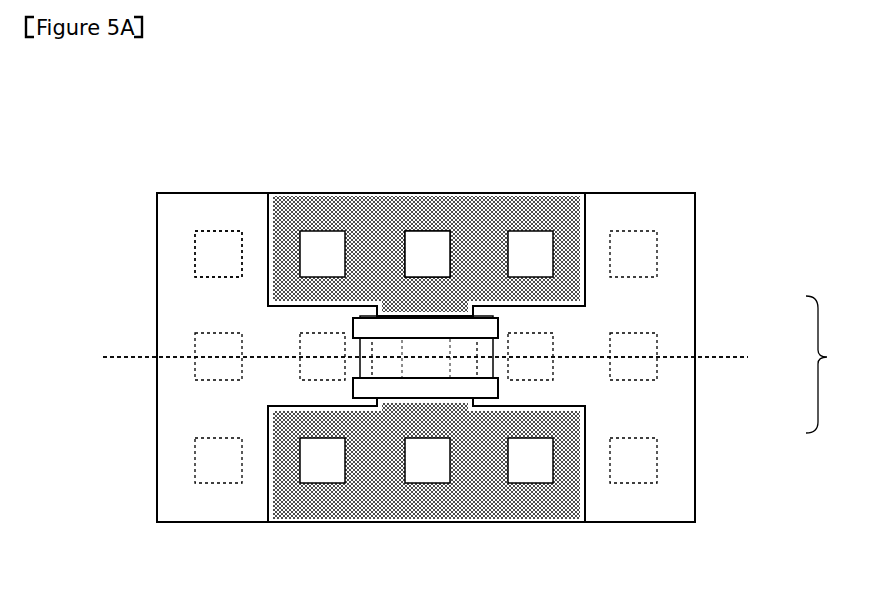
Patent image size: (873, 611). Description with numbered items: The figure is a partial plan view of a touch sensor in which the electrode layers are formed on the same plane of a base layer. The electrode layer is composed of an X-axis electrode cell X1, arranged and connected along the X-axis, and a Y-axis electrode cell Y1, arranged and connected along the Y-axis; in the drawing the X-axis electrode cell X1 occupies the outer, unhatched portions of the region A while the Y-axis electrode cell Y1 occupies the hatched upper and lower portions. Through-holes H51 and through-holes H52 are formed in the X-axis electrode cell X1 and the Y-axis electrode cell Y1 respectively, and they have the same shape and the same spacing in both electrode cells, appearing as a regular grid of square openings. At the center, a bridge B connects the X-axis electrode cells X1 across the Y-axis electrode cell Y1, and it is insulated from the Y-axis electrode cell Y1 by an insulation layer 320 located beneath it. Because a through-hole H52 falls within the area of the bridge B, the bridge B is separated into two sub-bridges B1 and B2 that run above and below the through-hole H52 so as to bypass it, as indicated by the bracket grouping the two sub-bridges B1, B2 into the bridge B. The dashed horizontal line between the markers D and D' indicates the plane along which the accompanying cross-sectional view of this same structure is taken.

The X-axis electrode cell X1 is at (182, 193).
The Y-axis electrode cell Y1 is at (478, 193).
The through-hole H51 is at (210, 257).
The through-hole H52 is at (433, 258).
The insulation layer 320 is at (392, 368).
The sub-bridge B1 is at (498, 328).
The sub-bridge B2 is at (498, 386).
The bridge B is at (826, 364).
The region A is at (695, 92).
The section line D is at (425, 392).
The section line D' is at (425, 392).